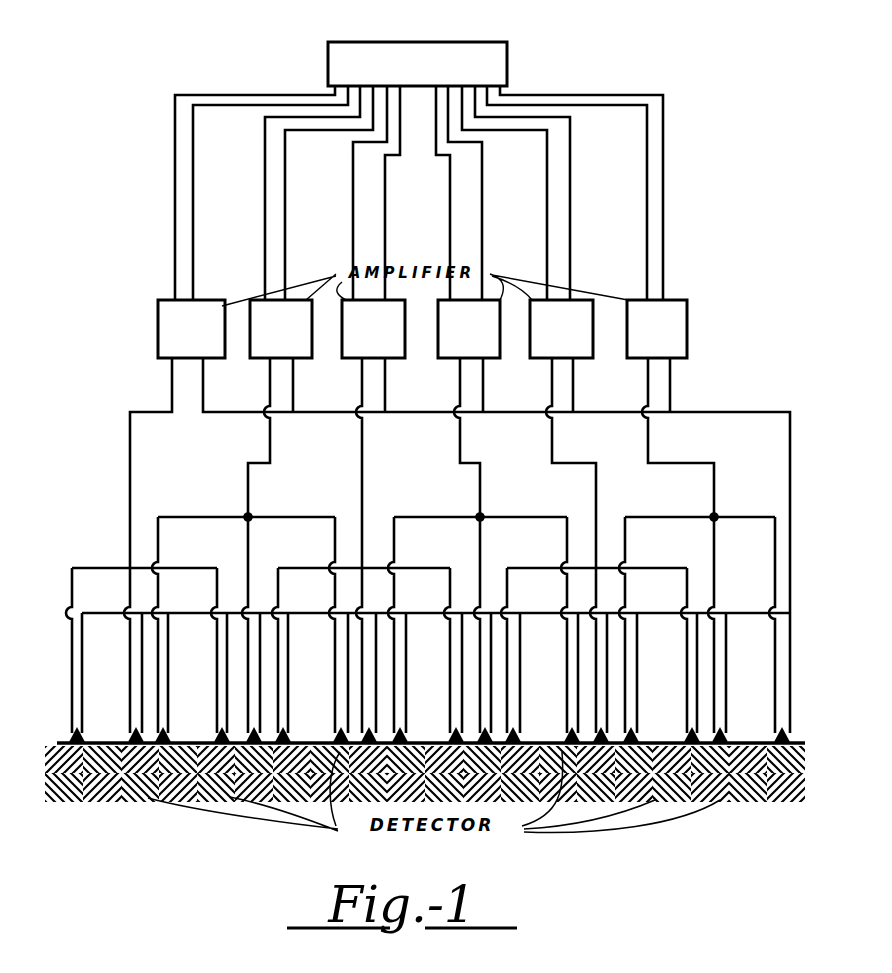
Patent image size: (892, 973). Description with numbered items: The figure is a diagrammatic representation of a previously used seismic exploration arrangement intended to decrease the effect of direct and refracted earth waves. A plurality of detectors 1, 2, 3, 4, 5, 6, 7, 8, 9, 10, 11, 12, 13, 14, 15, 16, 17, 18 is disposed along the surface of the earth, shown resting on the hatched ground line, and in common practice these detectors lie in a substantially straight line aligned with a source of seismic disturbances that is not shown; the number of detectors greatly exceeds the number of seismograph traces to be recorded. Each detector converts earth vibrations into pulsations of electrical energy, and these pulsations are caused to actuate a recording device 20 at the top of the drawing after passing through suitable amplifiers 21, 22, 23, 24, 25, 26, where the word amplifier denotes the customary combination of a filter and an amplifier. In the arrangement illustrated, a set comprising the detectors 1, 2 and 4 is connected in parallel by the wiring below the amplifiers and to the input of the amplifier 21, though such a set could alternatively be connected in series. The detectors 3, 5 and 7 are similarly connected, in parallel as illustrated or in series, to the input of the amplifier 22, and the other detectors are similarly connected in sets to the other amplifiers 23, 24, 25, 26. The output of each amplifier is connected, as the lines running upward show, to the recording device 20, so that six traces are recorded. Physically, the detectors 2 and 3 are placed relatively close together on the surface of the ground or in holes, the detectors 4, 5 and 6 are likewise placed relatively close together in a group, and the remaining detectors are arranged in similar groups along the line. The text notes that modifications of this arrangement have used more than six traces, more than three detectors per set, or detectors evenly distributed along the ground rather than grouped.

The recording device 20 is at (449, 43).
The amplifier 21 is at (191, 329).
The amplifier 22 is at (281, 329).
The amplifier 23 is at (373, 329).
The amplifier 24 is at (469, 329).
The amplifier 25 is at (561, 329).
The amplifier 26 is at (657, 329).
The detector 1 is at (75, 760).
The detector 2 is at (134, 760).
The detector 3 is at (165, 760).
The detector 4 is at (222, 760).
The detector 5 is at (255, 760).
The detector 6 is at (286, 760).
The detector 7 is at (344, 760).
The detector 8 is at (372, 760).
The detector 9 is at (403, 760).
The detector 10 is at (455, 760).
The detector 11 is at (485, 760).
The detector 12 is at (516, 760).
The detector 13 is at (579, 760).
The detector 14 is at (608, 760).
The detector 15 is at (643, 760).
The detector 16 is at (695, 760).
The detector 17 is at (726, 760).
The detector 18 is at (782, 760).